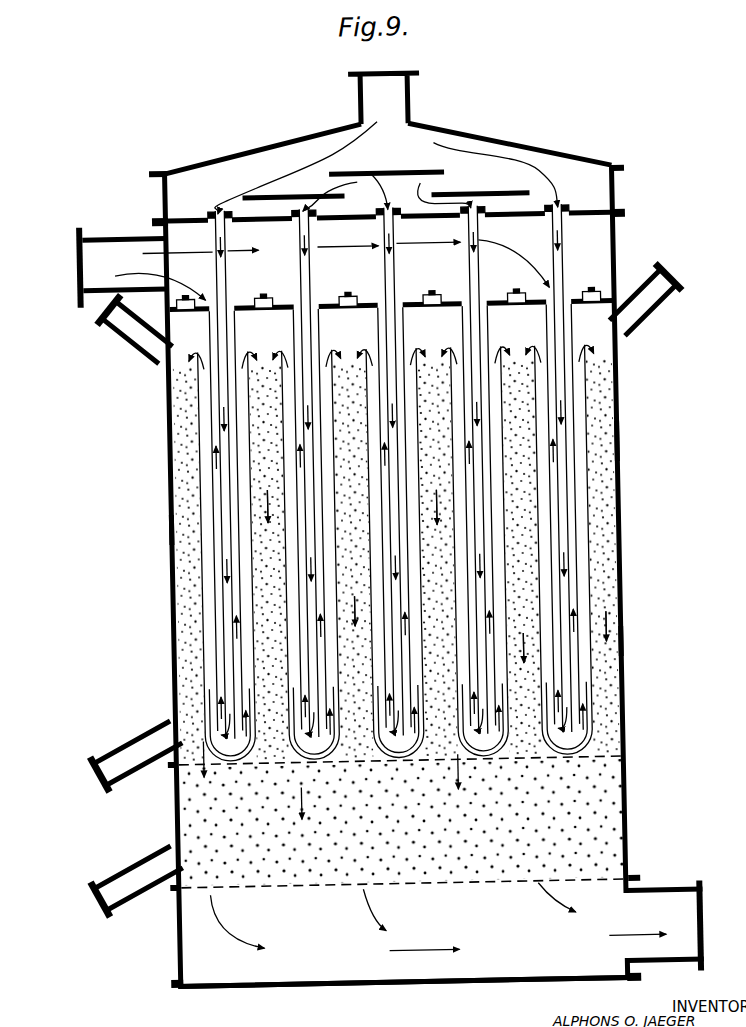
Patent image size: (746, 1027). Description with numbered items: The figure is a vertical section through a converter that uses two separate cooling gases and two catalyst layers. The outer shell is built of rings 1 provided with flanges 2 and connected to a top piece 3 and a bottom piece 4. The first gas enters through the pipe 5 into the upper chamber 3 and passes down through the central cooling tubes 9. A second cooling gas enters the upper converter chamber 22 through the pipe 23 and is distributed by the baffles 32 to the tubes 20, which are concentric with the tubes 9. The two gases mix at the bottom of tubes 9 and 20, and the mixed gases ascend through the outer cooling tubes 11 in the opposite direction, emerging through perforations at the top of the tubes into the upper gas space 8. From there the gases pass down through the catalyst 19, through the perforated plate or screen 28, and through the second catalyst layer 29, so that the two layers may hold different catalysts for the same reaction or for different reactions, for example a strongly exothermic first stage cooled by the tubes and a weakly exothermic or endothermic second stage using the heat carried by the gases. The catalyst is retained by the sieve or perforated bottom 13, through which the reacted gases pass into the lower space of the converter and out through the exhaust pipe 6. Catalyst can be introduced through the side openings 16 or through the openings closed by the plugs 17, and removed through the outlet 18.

The rings 1 is at (163, 196).
The flanges 2 is at (163, 530).
The top piece 3 is at (363, 253).
The bottom piece 4 is at (349, 992).
The pipe 5 is at (123, 267).
The exhaust pipe 6 is at (659, 898).
The upper gas space 8 is at (392, 321).
The central cooling tubes 9 is at (291, 333).
The outer cooling tubes 11 is at (197, 611).
The sieve or perforated bottom 13 is at (331, 886).
The side openings 16 is at (146, 333).
The plugs 17 is at (430, 299).
The outlet 18 is at (106, 761).
The catalyst 19 is at (614, 450).
The tubes 20 is at (565, 212).
The upper converter chamber 22 is at (385, 166).
The pipe 23 is at (412, 94).
The perforated plate or screen 28 is at (617, 770).
The catalyst layer 29 is at (180, 818).
The baffles 32 is at (492, 199).